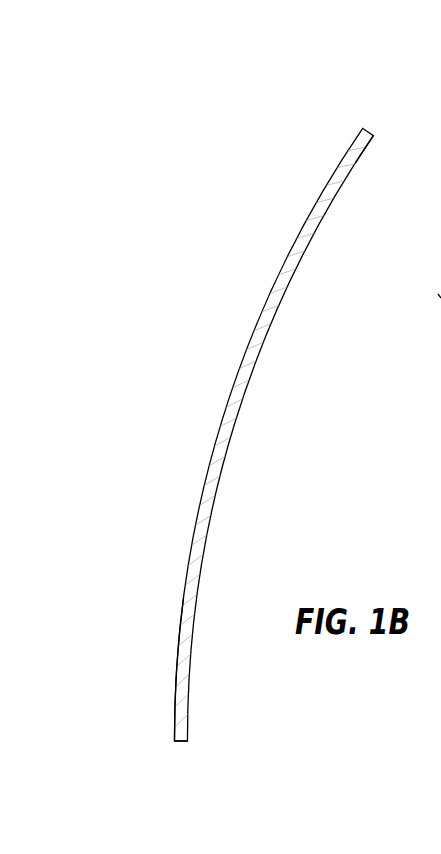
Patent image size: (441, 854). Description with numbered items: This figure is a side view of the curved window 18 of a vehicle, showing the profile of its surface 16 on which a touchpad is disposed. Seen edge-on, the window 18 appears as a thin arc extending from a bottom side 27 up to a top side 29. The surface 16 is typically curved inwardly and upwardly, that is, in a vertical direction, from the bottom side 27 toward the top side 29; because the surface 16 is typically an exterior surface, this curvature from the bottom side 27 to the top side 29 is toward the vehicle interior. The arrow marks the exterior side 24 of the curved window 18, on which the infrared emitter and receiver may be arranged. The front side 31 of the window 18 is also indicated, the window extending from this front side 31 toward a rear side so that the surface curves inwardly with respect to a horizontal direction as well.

The curved surface 16 is at (303, 232).
The curved window 18 is at (190, 603).
The exterior side 24 is at (208, 319).
The bottom side 27 is at (182, 742).
The top side 29 is at (373, 130).
The front side 31 is at (440, 297).